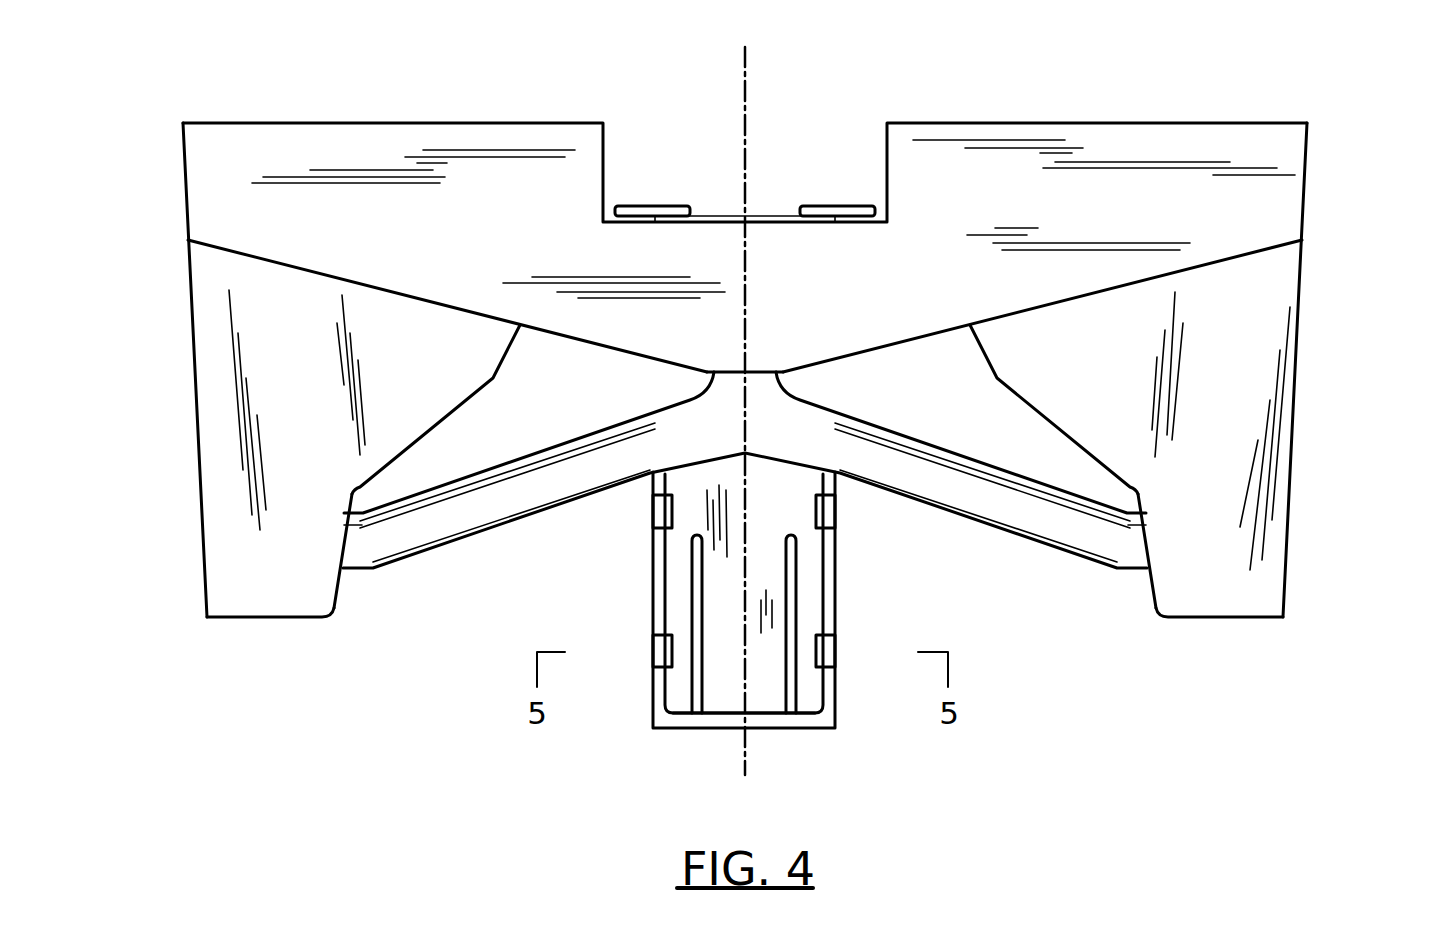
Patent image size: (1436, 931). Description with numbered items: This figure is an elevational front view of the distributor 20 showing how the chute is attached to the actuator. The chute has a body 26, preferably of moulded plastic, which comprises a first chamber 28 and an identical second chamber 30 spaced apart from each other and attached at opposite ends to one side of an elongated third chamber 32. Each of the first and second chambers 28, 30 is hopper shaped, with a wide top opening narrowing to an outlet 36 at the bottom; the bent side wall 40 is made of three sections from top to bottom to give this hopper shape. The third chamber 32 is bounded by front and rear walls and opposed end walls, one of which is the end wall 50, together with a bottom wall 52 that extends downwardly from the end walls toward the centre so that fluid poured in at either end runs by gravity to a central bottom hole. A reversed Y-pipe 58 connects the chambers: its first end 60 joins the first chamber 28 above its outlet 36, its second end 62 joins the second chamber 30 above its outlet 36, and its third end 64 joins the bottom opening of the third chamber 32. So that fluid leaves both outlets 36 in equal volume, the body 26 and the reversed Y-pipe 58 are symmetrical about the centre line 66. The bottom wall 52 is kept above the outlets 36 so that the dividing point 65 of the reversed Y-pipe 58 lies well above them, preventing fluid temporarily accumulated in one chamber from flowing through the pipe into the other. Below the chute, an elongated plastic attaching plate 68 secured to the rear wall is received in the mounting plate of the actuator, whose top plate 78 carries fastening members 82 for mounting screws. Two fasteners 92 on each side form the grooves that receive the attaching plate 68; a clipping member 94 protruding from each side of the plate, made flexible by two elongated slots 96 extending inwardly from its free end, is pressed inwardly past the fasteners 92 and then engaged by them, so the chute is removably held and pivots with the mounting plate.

The distributor 20 is at (551, 93).
The body 26 is at (1128, 123).
The first chamber 28 is at (1290, 488).
The second chamber 30 is at (202, 488).
The third chamber 32 is at (1020, 122).
The outlet 36 is at (237, 617).
The side wall 40 is at (1023, 405).
The end wall 50 is at (1307, 177).
The bottom wall 52 is at (1187, 276).
The reversed Y-pipe 58 is at (1034, 544).
The first end 60 is at (1146, 576).
The second end 62 is at (344, 570).
The third end 64 is at (785, 373).
The dividing point 65 is at (750, 458).
The centre line 66 is at (745, 65).
The attaching plate 68 is at (753, 703).
The top plate 78 is at (717, 214).
The fastening members 82 is at (651, 206).
The fasteners 92 is at (658, 517).
The clipping member 94 is at (663, 626).
The elongated slots 96 is at (698, 697).